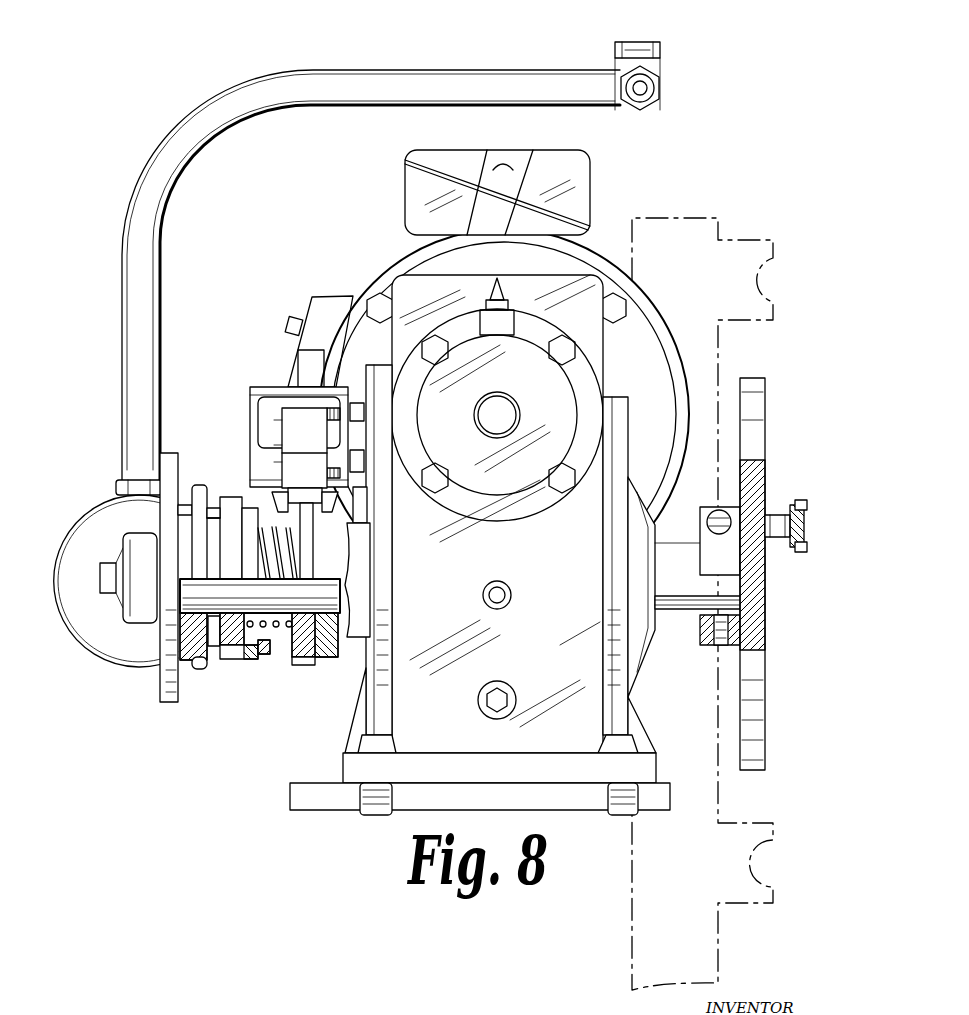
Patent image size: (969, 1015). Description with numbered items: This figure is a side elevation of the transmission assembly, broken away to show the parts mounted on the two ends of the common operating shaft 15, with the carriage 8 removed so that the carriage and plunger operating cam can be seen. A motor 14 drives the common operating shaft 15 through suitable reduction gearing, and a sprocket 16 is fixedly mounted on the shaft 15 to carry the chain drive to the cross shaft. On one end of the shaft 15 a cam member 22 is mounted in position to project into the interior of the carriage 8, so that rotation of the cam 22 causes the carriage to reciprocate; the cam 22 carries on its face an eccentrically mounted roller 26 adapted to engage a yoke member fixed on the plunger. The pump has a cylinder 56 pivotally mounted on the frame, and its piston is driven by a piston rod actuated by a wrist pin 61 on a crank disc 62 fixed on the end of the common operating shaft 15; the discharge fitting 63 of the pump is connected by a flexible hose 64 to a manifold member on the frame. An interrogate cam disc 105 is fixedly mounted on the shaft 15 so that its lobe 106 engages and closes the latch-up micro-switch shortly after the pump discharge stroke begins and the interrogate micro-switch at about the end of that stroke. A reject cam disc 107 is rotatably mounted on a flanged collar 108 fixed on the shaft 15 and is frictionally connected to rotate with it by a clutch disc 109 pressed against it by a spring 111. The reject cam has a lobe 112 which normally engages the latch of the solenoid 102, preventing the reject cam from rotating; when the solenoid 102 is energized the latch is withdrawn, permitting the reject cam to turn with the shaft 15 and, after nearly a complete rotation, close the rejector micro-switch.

The carriage 8 is at (698, 840).
The motor 14 is at (385, 268).
The common operating shaft 15 is at (681, 585).
The sprocket 16 is at (200, 665).
The cam member 22 is at (758, 688).
The eccentrically mounted roller 26 is at (802, 512).
The cylinder 56 is at (103, 643).
The wrist pin 61 is at (137, 608).
The crank disc 62 is at (168, 672).
The discharge fitting 63 is at (118, 488).
The flexible hose 64 is at (138, 312).
The solenoid 102 is at (290, 422).
The interrogate cam disc 105 is at (235, 498).
The lobe 106 is at (212, 518).
The reject cam disc 107 is at (312, 658).
The flanged collar 108 is at (326, 652).
The clutch disc 109 is at (290, 648).
The spring 111 is at (262, 635).
The lobe 112 is at (335, 515).